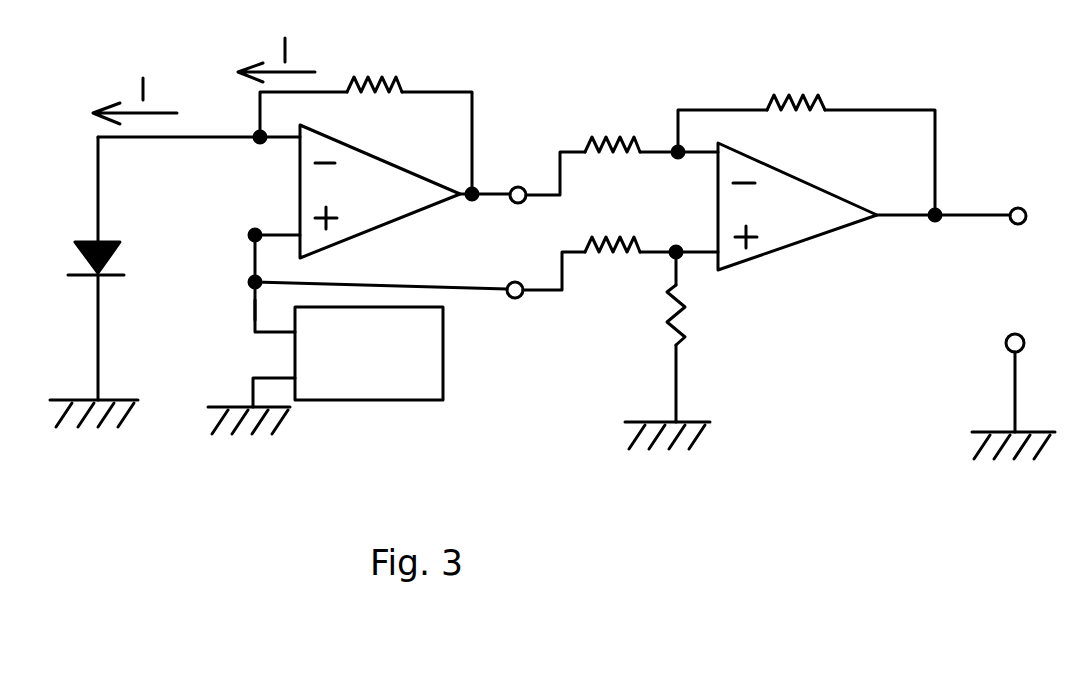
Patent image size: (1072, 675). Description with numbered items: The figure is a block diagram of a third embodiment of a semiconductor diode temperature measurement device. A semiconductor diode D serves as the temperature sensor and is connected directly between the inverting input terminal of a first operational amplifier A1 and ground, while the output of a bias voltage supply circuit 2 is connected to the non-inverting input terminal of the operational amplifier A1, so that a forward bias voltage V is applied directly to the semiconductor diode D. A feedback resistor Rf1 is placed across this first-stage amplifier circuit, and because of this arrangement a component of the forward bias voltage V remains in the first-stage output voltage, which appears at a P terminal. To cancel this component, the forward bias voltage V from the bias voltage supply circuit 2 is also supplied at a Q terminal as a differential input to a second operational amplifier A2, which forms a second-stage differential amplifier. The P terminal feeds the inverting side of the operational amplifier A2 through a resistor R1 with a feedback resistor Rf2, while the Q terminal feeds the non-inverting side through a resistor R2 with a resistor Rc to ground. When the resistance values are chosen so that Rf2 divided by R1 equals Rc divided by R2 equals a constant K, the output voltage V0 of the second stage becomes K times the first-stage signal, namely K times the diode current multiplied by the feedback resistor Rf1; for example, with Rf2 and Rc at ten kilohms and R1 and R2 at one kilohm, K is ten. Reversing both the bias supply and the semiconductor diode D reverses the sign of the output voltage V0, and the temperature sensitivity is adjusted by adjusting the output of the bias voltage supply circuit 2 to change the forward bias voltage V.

The bias voltage supply circuit 2 is at (443, 347).
The semiconductor diode D is at (104, 282).
The operational amplifier A1 is at (380, 191).
The operational amplifier A2 is at (797, 206).
The feedback resistor Rf1 is at (366, 118).
The feedback resistor Rf2 is at (806, 137).
The resistor R1 is at (651, 125).
The resistor R2 is at (651, 227).
The resistor Rc is at (682, 350).
The P terminal P is at (517, 178).
The Q terminal Q is at (514, 274).
The forward bias voltage V is at (245, 334).
The output voltage V0 is at (1013, 333).